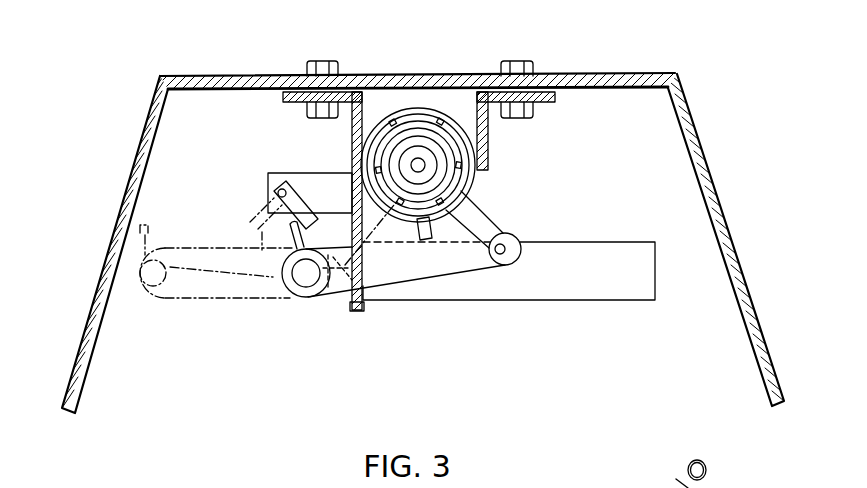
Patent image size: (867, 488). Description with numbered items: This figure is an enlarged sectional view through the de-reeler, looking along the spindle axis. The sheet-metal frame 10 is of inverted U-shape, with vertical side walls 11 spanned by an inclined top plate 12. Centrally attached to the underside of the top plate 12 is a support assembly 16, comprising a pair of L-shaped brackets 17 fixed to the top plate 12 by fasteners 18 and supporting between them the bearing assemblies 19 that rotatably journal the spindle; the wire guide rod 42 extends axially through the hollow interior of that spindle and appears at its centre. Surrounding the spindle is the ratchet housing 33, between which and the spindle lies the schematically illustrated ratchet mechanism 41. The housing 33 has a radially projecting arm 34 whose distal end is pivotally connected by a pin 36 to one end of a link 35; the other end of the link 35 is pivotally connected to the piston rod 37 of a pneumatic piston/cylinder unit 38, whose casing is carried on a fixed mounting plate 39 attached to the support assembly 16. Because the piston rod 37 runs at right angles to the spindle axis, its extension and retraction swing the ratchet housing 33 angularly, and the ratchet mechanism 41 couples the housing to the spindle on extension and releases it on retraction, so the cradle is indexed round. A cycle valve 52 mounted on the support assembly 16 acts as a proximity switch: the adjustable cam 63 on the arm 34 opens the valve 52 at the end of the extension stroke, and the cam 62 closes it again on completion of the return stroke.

The frame 10 is at (424, 229).
The side walls 11 is at (100, 330).
The top plate 12 is at (178, 75).
The support assembly 16 is at (408, 166).
The L-shaped brackets 17 is at (283, 97).
The fasteners 18 is at (320, 62).
The bearing assemblies 19 is at (400, 127).
The ratchet housing 33 is at (461, 177).
The radially projecting arm 34 is at (519, 264).
The link 35 is at (398, 287).
The pin 36 is at (511, 264).
The piston rod 37 is at (325, 296).
The pneumatic piston/cylinder unit 38 is at (637, 305).
The fixed mounting plate 39 is at (352, 303).
The ratchet mechanism 41 is at (451, 147).
The wire guide rod 42 is at (416, 164).
The cycle valve 52 is at (268, 180).
The adjustable cam 62 is at (290, 240).
The adjustable cam 63 is at (417, 239).